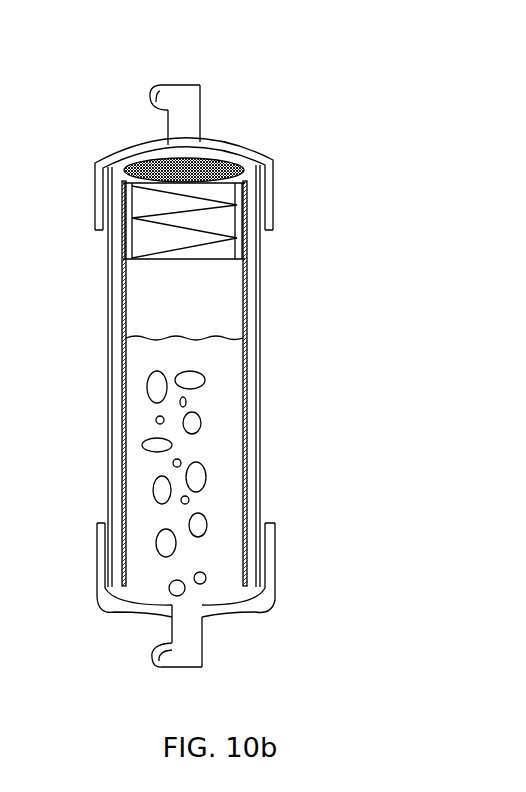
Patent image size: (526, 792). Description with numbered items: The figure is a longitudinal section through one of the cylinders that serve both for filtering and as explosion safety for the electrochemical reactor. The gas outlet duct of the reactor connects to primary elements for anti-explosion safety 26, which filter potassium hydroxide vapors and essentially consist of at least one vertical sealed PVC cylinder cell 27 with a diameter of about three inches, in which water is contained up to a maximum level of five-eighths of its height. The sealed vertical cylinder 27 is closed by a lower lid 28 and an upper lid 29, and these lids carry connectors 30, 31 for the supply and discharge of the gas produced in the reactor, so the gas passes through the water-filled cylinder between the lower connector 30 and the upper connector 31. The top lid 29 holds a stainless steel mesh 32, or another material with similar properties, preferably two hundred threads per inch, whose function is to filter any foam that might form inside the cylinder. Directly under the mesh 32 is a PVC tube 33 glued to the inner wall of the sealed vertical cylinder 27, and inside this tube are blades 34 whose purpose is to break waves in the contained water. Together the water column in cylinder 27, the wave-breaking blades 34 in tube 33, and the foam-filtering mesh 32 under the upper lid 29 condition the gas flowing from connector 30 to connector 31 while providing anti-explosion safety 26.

The primary elements for anti-explosion safety 26 is at (283, 325).
The vertical sealed PVC cylinder cell 27 is at (255, 392).
The lower lid 28 is at (275, 568).
The upper lid 29 is at (273, 175).
The connector 30 is at (187, 652).
The connector 31 is at (190, 100).
The stainless steel mesh 32 is at (200, 137).
The PVC tube 33 is at (130, 235).
The blades 34 is at (182, 215).